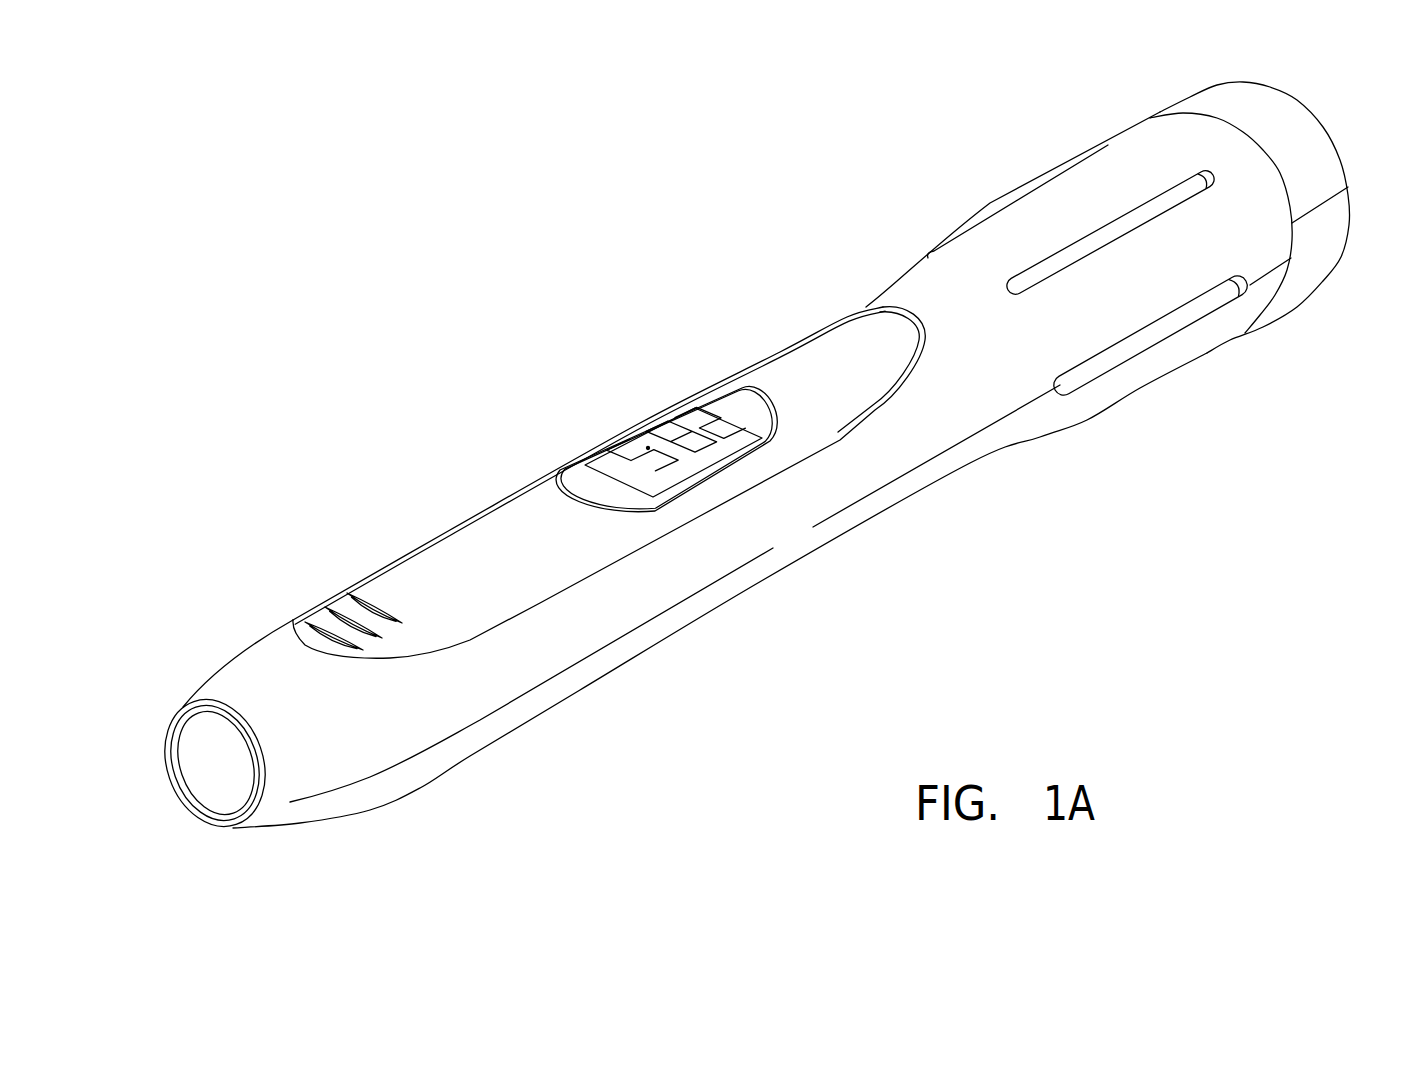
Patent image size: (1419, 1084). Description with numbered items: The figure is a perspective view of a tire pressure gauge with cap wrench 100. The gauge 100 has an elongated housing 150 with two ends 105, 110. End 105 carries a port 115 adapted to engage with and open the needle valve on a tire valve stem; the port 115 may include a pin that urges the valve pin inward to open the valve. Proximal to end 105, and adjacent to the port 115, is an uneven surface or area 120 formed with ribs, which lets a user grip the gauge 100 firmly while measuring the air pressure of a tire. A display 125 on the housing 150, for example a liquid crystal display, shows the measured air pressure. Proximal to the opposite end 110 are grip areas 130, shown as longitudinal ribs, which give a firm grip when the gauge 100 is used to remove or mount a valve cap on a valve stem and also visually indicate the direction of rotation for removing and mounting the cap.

The tire pressure gauge with cap wrench 100 is at (408, 422).
The end 105 is at (240, 829).
The end 110 is at (1327, 257).
The port 115 is at (215, 768).
The uneven surface/area 120 is at (340, 598).
The display 125 is at (668, 432).
The grip areas 130 is at (1087, 245).
The elongated housing 150 is at (858, 450).